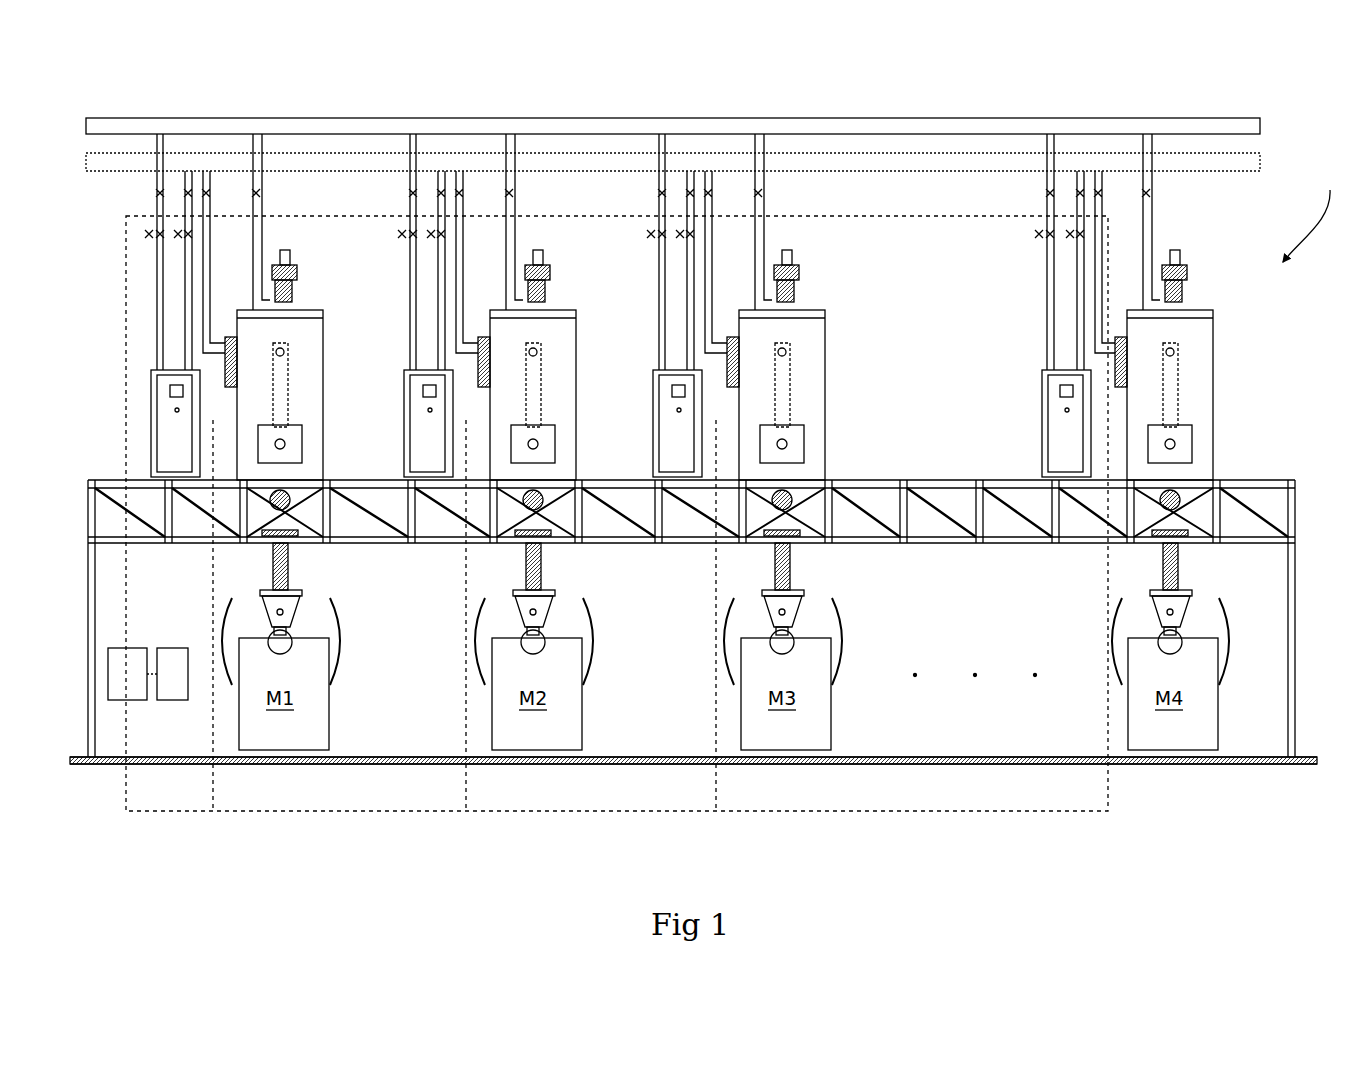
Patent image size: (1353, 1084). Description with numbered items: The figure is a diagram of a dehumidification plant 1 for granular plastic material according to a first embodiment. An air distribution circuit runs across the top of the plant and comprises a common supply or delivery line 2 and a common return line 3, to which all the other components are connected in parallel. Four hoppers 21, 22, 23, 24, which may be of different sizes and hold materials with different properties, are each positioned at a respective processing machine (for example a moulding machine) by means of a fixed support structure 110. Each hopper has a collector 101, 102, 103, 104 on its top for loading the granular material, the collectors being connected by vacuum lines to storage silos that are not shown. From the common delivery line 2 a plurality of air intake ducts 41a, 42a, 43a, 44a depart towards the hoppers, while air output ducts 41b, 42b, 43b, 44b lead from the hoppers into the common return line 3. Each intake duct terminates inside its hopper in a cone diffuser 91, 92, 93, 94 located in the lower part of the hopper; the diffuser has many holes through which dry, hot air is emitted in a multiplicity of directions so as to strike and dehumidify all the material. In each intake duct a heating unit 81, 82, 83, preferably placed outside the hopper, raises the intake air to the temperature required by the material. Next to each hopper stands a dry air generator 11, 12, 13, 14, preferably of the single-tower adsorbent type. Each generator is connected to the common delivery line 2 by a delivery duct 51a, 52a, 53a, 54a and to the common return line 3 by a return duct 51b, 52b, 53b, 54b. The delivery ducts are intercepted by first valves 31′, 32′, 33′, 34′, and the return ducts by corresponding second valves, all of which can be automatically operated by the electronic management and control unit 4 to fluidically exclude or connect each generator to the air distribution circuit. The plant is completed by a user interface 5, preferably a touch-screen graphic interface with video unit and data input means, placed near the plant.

The dehumidification plant 1 is at (1311, 214).
The common supply line 2 is at (1243, 171).
The common return line 3 is at (1245, 131).
The electronic management and control unit 4 is at (120, 686).
The user interface 5 is at (165, 686).
The dry air generator 11 is at (168, 451).
The dry air generator 12 is at (421, 451).
The dry air generator 13 is at (670, 451).
The dry air generator 14 is at (1058, 451).
The hopper 21 is at (300, 352).
The hopper 22 is at (553, 352).
The hopper 23 is at (802, 352).
The hopper 24 is at (1197, 352).
The first valve 31′ is at (180, 245).
The first valve 32′ is at (432, 245).
The first valve 33′ is at (681, 245).
The first valve 34′ is at (1071, 245).
The air intake duct 41a is at (212, 202).
The air output duct 41b is at (260, 182).
The air intake duct 42a is at (460, 198).
The air output duct 42b is at (514, 185).
The air intake duct 43a is at (709, 197).
The air output duct 43b is at (764, 185).
The air intake duct 44a is at (1102, 197).
The air output duct 44b is at (1154, 185).
The delivery duct 51a is at (187, 325).
The return duct 51b is at (152, 180).
The delivery duct 52a is at (440, 325).
The return duct 52b is at (408, 203).
The delivery duct 53a is at (689, 325).
The return duct 53b is at (659, 203).
The delivery duct 54a is at (1079, 325).
The return duct 54b is at (1047, 203).
The heating unit 81 is at (229, 390).
The heating unit 82 is at (482, 390).
The heating unit 83 is at (731, 390).
The cone diffuser 91 is at (232, 549).
The cone diffuser 92 is at (485, 549).
The cone diffuser 93 is at (736, 549).
The cone diffuser 94 is at (1125, 549).
The shut-off valve 101 is at (283, 250).
The collector 102 is at (537, 250).
The collector 103 is at (786, 250).
The collector 104 is at (1177, 252).
The fixed support structure 110 is at (1300, 517).